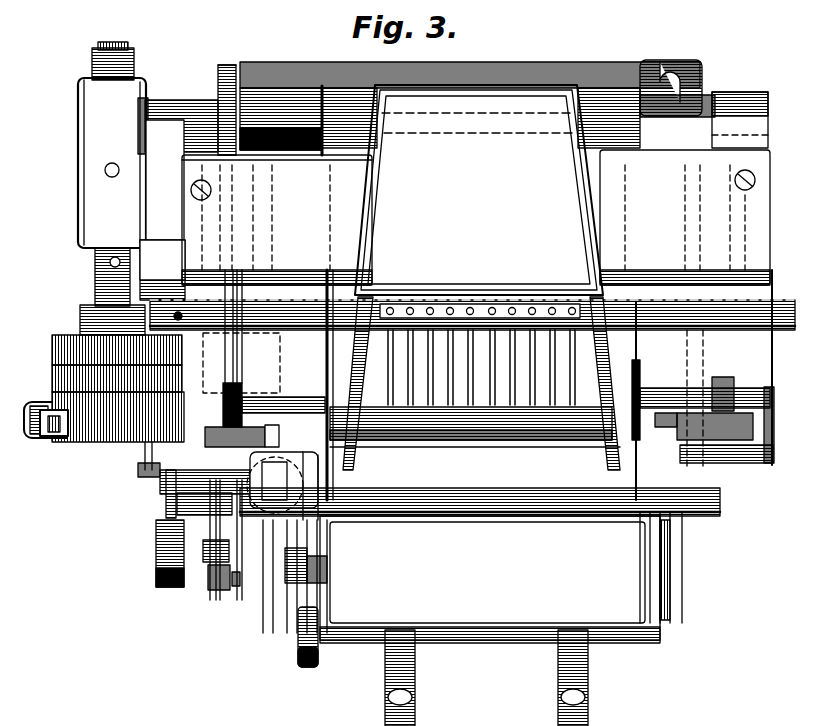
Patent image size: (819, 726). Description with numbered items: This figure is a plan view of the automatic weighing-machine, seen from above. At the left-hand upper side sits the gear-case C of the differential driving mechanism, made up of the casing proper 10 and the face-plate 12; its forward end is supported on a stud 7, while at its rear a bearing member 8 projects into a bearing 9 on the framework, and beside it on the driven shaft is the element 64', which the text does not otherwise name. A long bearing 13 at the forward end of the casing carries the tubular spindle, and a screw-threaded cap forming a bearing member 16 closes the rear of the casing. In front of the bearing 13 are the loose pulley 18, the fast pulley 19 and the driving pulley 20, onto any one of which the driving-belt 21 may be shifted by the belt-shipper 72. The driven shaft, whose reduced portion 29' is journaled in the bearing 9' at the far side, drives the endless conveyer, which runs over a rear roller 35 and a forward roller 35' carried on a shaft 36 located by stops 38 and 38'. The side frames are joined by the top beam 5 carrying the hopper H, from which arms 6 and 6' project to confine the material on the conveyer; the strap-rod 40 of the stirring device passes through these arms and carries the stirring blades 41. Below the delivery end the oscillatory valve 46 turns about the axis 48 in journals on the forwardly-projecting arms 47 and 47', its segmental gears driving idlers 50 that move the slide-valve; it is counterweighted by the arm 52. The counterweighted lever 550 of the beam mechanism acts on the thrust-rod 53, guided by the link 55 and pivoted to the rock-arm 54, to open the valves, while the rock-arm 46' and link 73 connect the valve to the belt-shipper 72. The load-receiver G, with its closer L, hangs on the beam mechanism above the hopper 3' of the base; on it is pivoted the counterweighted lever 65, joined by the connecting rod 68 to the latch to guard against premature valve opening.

The bearing member 16 is at (92, 68).
The bearing member 8 is at (152, 105).
The bearing 9 is at (181, 112).
The knurled nut 64' is at (212, 110).
The face-plate 12 is at (79, 140).
The gear-case C is at (63, 165).
The casing proper 10 is at (135, 190).
The stud 7 is at (166, 265).
The long bearing 13 is at (95, 262).
The roller 35 is at (470, 96).
The reduced portion of shaft 29' is at (646, 91).
The bearing 9' is at (740, 105).
The hopper H is at (479, 190).
The top beam 5 is at (277, 220).
The strap-rod 40 is at (288, 326).
The stop 38 is at (241, 348).
The idler 50 is at (290, 397).
The arm 6 is at (358, 383).
The arm 6' is at (600, 383).
The roller 35' is at (652, 400).
The shaft 36 is at (652, 388).
The stop 38' is at (685, 310).
The stirring arms 41 is at (533, 405).
The oscillatory valve 46 is at (480, 492).
The loose pulley 18 is at (55, 352).
The fast pulley 19 is at (55, 378).
The driving pulley 20 is at (118, 417).
The belt-shipper 72 is at (35, 436).
The driving-belt 21 is at (58, 430).
The link 73 is at (145, 455).
The axis 48 is at (138, 472).
The rock-arm 46' is at (180, 485).
The arm 47 is at (219, 486).
The counterweighted arm 52 is at (166, 500).
The link 55 is at (207, 522).
The rock-arm 54 is at (210, 540).
The thrust-rod 53 is at (214, 588).
The counterweighted lever 550 is at (236, 586).
The connecting rod 68 is at (295, 536).
The lever 65 is at (308, 628).
The hopper 3' is at (677, 568).
The load-receiver G is at (495, 624).
The closer L is at (415, 678).
The arm 47' is at (733, 441).